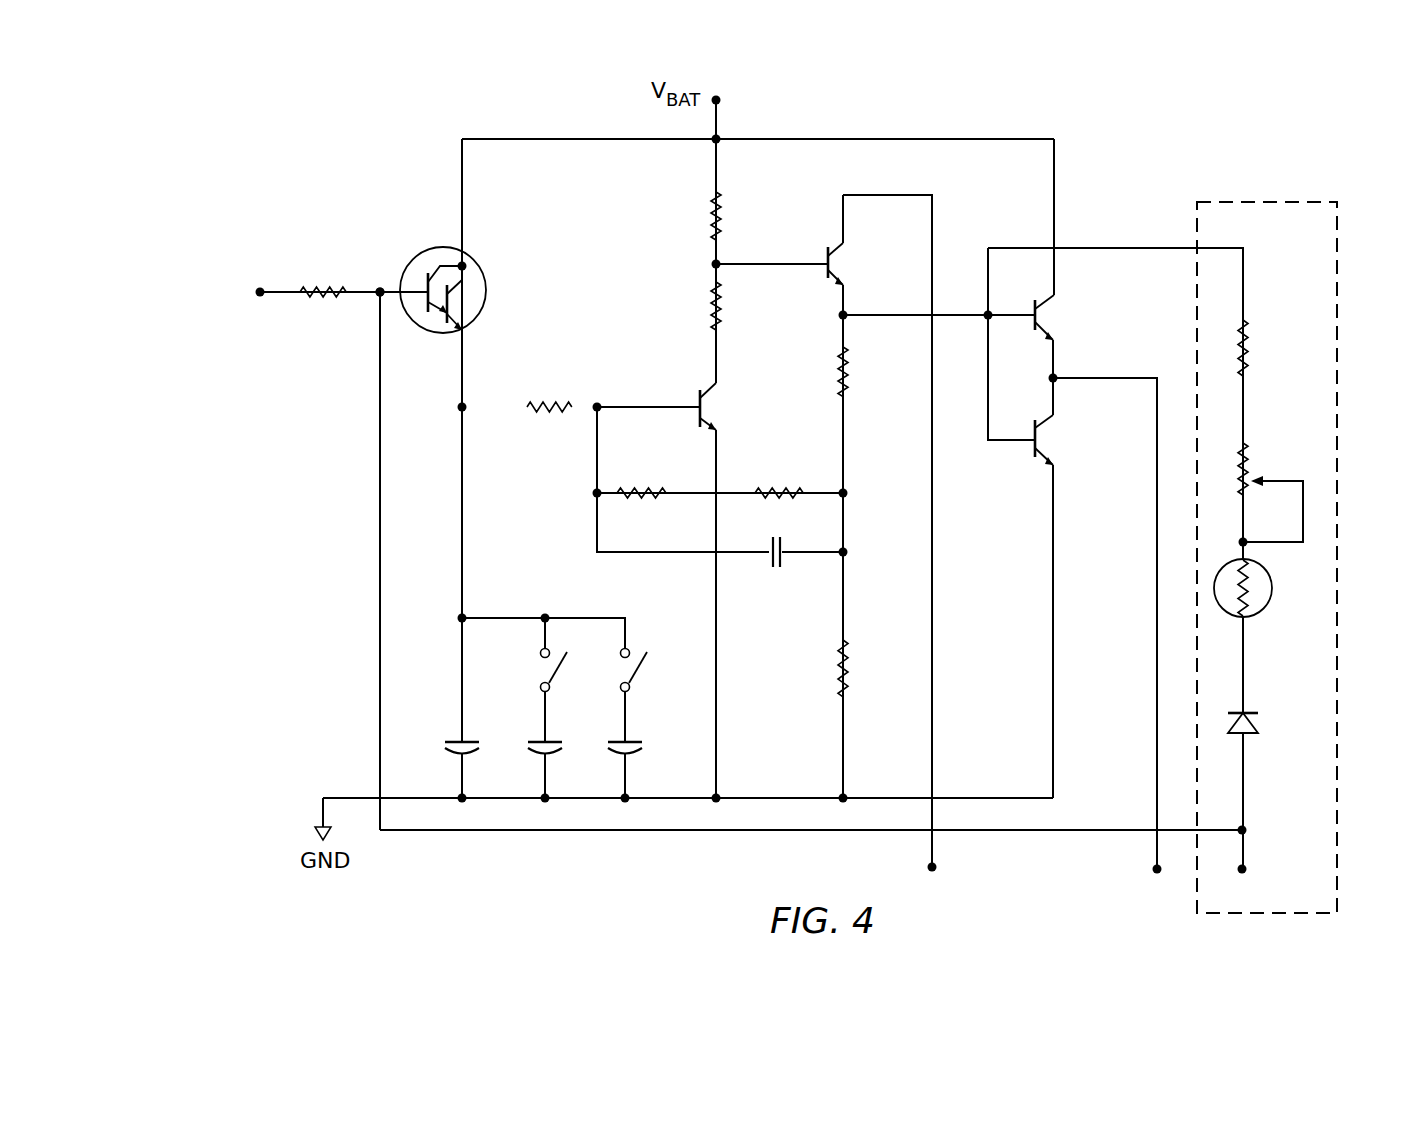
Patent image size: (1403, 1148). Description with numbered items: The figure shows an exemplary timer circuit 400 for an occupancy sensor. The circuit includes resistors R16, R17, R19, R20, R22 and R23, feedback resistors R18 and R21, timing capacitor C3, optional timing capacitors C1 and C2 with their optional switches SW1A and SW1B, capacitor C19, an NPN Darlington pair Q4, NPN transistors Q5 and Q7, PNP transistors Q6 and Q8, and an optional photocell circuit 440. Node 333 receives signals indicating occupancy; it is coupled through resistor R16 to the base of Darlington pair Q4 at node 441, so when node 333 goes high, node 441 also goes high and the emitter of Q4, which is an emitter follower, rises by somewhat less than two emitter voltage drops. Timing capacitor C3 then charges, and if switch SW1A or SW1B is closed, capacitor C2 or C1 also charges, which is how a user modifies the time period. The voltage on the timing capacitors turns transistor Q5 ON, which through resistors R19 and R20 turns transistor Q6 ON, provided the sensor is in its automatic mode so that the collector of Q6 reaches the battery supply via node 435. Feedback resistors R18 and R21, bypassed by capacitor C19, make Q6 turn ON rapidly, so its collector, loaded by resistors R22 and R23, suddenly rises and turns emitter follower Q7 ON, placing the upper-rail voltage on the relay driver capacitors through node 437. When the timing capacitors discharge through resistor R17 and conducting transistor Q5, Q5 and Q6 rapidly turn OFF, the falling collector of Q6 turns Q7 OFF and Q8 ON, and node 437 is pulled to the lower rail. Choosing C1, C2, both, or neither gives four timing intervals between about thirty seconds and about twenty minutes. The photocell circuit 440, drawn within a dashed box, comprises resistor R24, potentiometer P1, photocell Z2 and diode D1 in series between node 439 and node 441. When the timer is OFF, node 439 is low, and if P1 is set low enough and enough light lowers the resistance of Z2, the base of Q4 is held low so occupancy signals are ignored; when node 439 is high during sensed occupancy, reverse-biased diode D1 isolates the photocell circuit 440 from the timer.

The timer circuit 400 is at (1318, 161).
The node 333 is at (257, 296).
The resistor R16 is at (324, 283).
The node 441 is at (380, 268).
The NPN Darlington pair Q4 is at (486, 274).
The resistor R17 is at (545, 403).
The resistor R19 is at (721, 213).
The resistor R20 is at (721, 319).
The NPN transistor Q5 is at (712, 406).
The PNP transistor Q6 is at (834, 262).
The resistor R22 is at (882, 352).
The feedback resistor R18 is at (641, 490).
The feedback resistor R21 is at (775, 490).
The capacitor C19 is at (778, 571).
The resistor R23 is at (849, 661).
The node 439 is at (986, 312).
The NPN transistor Q7 is at (1050, 314).
The PNP transistor Q8 is at (1050, 441).
The optional switch SW1A is at (540, 668).
The optional switch SW1B is at (646, 659).
The timing capacitor C3 is at (444, 746).
The optional timing capacitor C2 is at (526, 746).
The optional timing capacitor C1 is at (606, 746).
The node 435 is at (933, 872).
The node 437 is at (1156, 872).
The optional photocell circuit 440 is at (1229, 200).
The resistor R24 is at (1250, 336).
The potentiometer P1 is at (1262, 468).
The photocell Z2 is at (1262, 614).
The diode D1 is at (1251, 735).